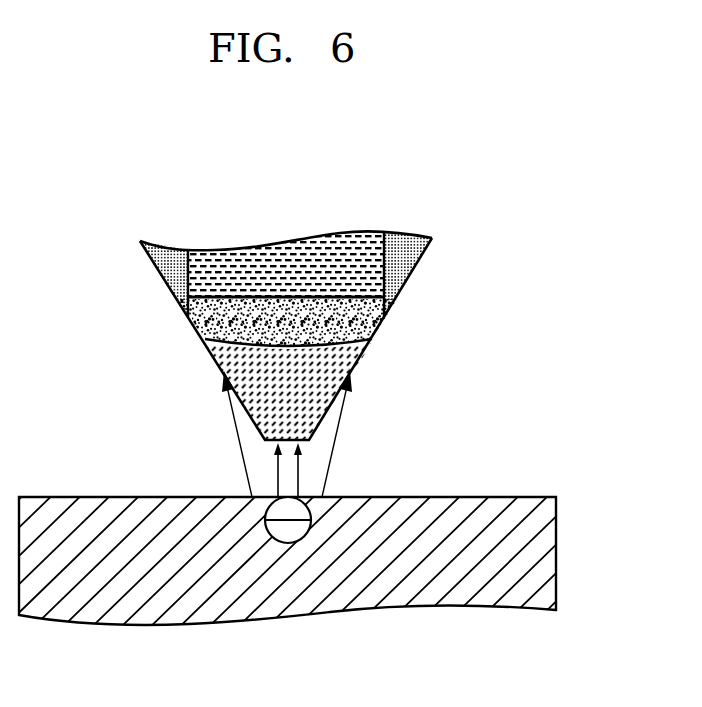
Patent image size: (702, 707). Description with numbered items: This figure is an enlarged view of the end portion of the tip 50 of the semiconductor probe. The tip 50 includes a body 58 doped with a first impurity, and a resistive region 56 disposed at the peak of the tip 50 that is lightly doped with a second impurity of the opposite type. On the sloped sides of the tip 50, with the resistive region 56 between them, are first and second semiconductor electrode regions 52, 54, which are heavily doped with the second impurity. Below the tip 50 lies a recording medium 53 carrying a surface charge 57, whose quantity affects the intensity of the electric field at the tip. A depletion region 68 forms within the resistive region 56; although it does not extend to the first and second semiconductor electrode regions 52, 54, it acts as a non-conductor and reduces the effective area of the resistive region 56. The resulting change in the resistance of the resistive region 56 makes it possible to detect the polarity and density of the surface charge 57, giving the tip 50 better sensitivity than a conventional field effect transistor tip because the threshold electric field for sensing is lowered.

The tip 50 is at (410, 354).
The first semiconductor electrode region 52 is at (170, 268).
The second semiconductor electrode region 54 is at (417, 265).
The body 58 is at (283, 243).
The resistive region 56 is at (213, 333).
The depletion region 68 is at (222, 375).
The surface charge 57 is at (303, 495).
The recording medium 53 is at (549, 543).